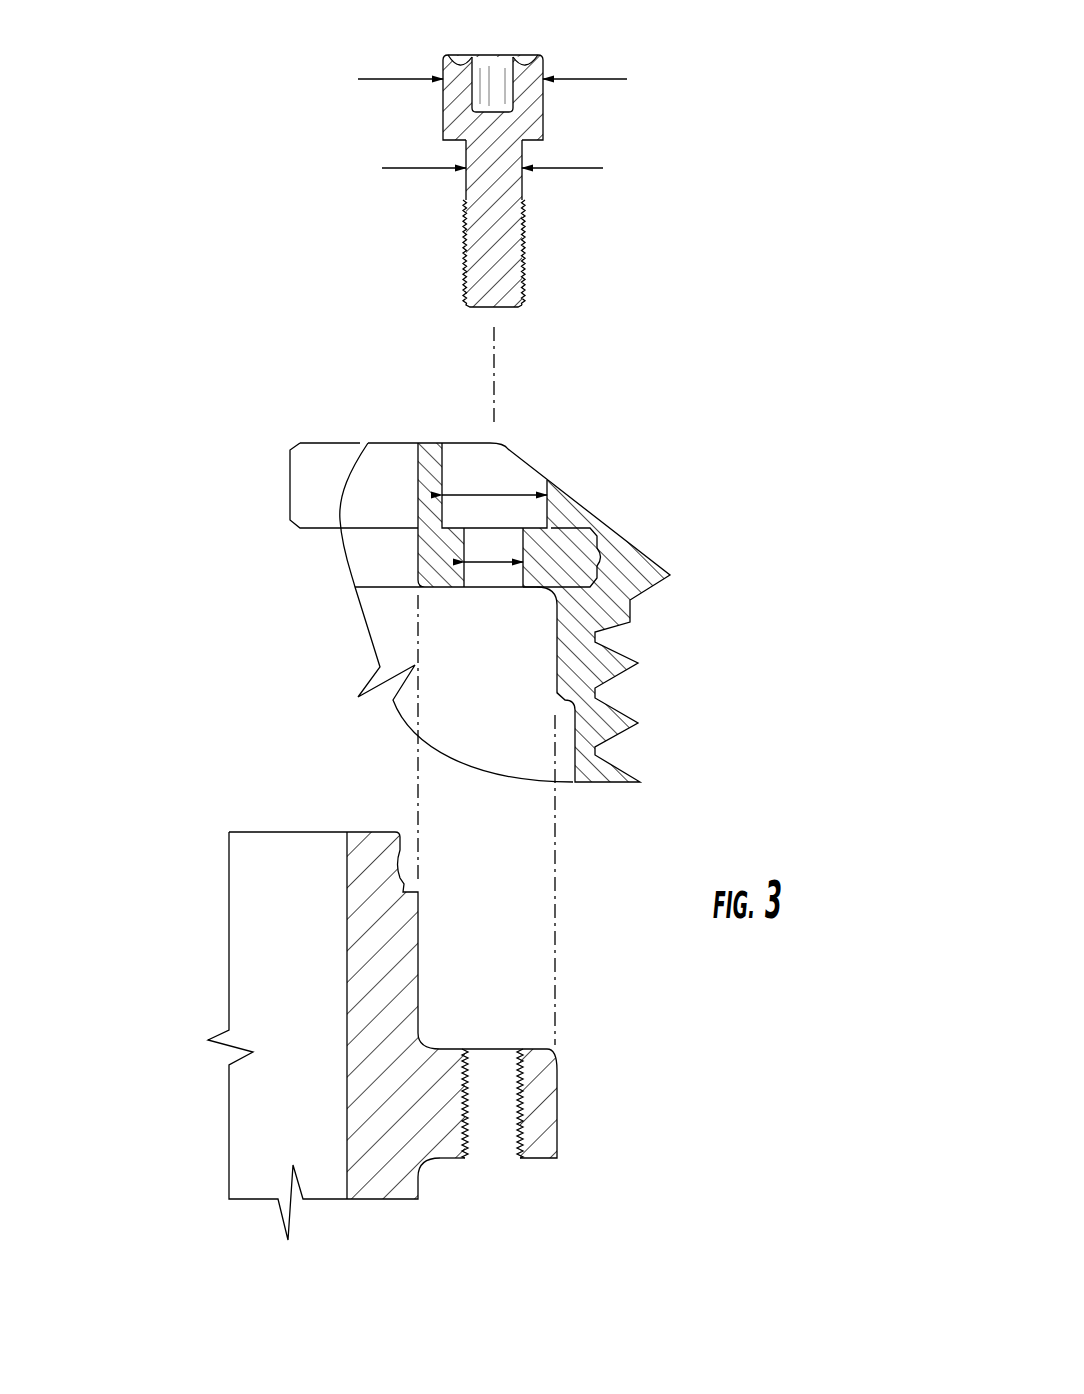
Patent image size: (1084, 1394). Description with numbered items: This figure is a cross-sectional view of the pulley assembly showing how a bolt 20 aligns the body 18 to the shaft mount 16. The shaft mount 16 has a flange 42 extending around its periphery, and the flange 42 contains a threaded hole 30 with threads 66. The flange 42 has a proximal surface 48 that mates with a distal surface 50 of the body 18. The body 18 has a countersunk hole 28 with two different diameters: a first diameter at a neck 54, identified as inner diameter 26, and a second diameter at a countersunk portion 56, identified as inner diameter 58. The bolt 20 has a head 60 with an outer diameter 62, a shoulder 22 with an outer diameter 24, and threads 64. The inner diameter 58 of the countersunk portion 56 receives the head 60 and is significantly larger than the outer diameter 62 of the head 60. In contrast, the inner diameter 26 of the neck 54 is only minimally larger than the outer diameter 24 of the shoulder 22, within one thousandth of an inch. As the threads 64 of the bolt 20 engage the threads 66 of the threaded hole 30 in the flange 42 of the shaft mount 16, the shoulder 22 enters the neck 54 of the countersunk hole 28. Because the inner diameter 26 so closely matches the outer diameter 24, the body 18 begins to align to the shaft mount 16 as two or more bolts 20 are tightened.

The shaft mount 16 is at (442, 1084).
The body 18 is at (497, 547).
The bolt 20 is at (502, 161).
The shoulder 22 is at (487, 188).
The outer diameter 24 is at (588, 168).
The inner diameter 26 is at (495, 563).
The countersunk hole 28 is at (483, 578).
The threaded hole 30 is at (493, 1140).
The flange 42 is at (537, 1158).
The proximal surface 48 is at (524, 1049).
The distal surface 50 is at (527, 583).
The neck 54 is at (600, 558).
The countersunk portion 56 is at (288, 476).
The inner diameter 58 is at (485, 497).
The head 60 is at (533, 97).
The outer diameter 62 is at (588, 79).
The threads 64 is at (522, 260).
The threads 66 is at (470, 1100).